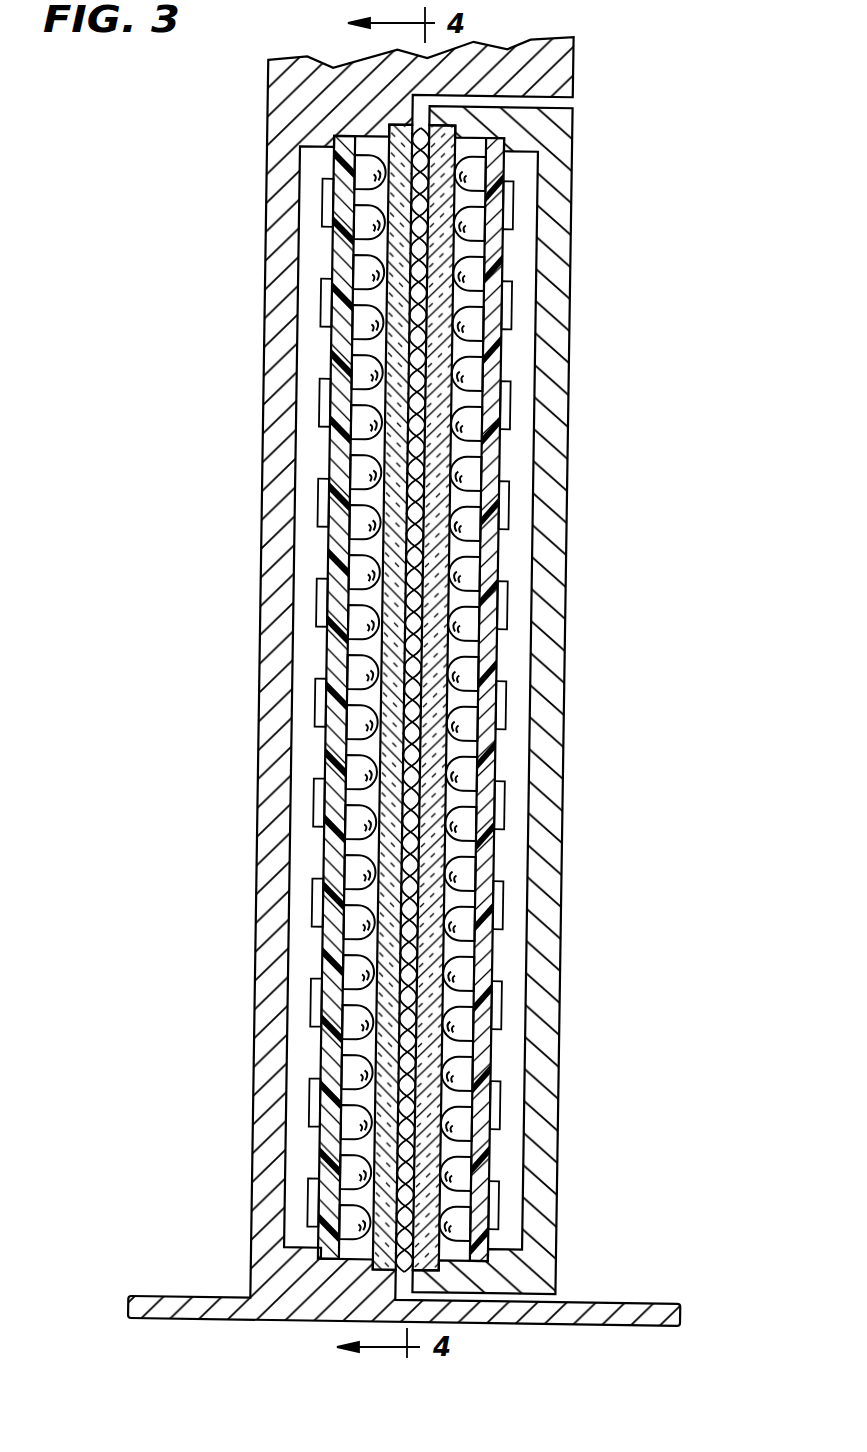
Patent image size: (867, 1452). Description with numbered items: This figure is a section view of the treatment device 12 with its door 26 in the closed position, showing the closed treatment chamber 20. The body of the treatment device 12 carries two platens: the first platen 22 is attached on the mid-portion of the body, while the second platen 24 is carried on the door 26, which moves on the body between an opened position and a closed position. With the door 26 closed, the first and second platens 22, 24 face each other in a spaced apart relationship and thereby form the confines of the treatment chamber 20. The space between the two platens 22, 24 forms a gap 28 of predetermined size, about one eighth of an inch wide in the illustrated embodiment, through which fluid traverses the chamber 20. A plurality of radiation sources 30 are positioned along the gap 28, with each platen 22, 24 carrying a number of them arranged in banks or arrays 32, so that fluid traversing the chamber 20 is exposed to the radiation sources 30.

The treatment device 12 is at (597, 110).
The treatment chamber 20 is at (430, 688).
The first platen 22 is at (397, 553).
The second platen 24 is at (437, 508).
The door 26 is at (557, 337).
The gap 28 is at (347, 456).
The radiation sources 30 is at (470, 273).
The bank or array 32 is at (337, 442).